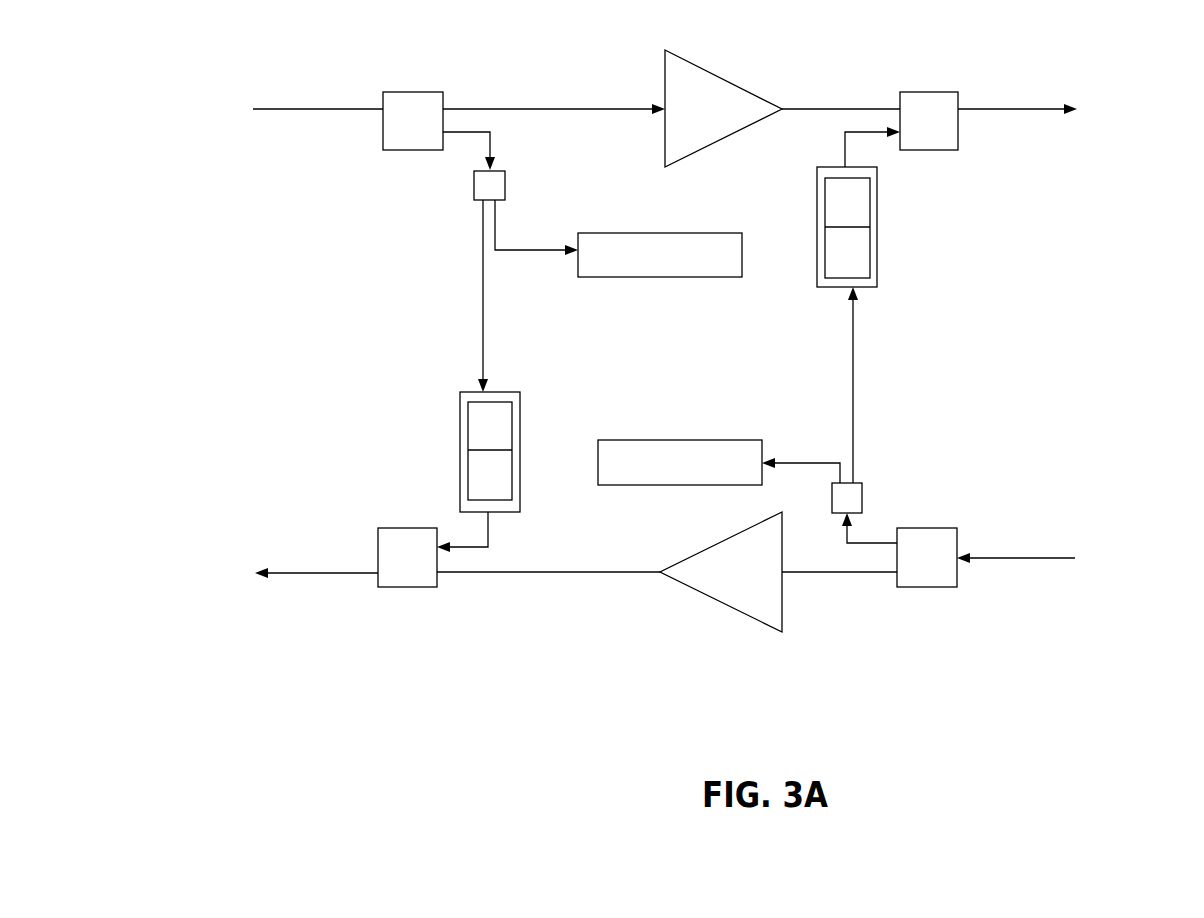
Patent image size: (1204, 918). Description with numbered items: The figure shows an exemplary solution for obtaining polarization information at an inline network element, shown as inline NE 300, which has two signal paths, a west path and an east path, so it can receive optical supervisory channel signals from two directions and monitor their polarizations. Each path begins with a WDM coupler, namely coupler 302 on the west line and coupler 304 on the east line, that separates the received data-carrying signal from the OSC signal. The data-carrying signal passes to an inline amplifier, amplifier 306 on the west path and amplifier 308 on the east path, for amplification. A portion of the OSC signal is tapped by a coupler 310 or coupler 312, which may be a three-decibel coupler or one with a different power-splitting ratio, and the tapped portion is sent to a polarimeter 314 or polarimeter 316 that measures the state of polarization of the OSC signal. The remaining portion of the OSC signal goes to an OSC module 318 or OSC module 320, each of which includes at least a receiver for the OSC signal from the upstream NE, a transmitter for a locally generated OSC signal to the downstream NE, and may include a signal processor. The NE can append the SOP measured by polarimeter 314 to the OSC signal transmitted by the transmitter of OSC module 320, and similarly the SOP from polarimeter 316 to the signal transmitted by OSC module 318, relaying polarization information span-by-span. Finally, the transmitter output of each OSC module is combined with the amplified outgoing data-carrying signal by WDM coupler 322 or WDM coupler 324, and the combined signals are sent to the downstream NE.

The inline NE 300 is at (668, 382).
The WDM coupler 302 is at (413, 92).
The WDM coupler 304 is at (922, 587).
The inline amplifier 306 is at (718, 75).
The inline amplifier 308 is at (720, 603).
The coupler 310 is at (474, 185).
The coupler 312 is at (862, 505).
The polarimeter 314 is at (637, 233).
The polarimeter 316 is at (683, 440).
The OSC module 318 is at (460, 458).
The OSC module 320 is at (877, 250).
The WDM coupler 322 is at (923, 92).
The WDM coupler 324 is at (402, 587).